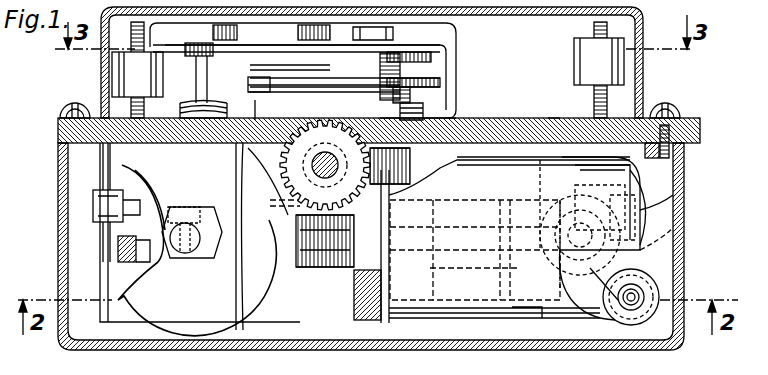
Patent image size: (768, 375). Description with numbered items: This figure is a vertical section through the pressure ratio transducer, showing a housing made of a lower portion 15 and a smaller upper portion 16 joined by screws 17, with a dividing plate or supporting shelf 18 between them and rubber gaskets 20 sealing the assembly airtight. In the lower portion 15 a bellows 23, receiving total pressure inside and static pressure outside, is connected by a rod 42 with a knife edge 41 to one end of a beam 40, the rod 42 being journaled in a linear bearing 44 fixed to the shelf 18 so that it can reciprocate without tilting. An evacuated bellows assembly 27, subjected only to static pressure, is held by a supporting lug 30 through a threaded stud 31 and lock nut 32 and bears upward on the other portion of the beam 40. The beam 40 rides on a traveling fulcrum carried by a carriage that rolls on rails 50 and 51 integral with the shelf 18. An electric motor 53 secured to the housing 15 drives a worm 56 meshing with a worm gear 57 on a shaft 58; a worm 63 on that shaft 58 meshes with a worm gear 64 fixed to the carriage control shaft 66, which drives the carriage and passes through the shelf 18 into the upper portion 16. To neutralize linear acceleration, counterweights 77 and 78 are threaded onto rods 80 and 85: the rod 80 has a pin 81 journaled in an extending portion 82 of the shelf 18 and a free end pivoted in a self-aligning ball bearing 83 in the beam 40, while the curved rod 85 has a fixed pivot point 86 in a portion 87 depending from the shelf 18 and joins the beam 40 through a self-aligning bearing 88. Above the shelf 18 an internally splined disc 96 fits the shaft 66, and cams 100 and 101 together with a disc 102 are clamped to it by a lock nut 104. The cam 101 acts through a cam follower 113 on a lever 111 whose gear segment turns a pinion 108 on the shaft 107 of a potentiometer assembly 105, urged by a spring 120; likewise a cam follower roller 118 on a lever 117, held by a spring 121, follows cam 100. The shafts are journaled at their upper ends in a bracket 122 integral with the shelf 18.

The lower housing portion 15 is at (684, 268).
The upper housing portion 16 is at (644, 34).
The screws 17 is at (672, 103).
The dividing plate or supporting shelf 18 is at (548, 106).
The rubber gaskets 20 is at (688, 124).
The bellows 23 is at (675, 203).
The evacuated bellows assembly 27 is at (228, 353).
The supporting lug 30 is at (200, 260).
The threaded stud 31 is at (183, 207).
The lock nut 32 is at (214, 210).
The beam 40 is at (490, 224).
The knife edge 41 is at (562, 212).
The rod 42 is at (592, 198).
The linear bearing 44 is at (605, 287).
The rail 50 is at (305, 268).
The rail 51 is at (236, 157).
The electric motor 53 is at (460, 320).
The worm 56 is at (322, 268).
The worm gear 57 is at (270, 180).
The shaft 58 is at (324, 178).
The worm 63 is at (322, 140).
The worm gear 64 is at (411, 163).
The carriage control shaft 66 is at (383, 70).
The counterweight 77 is at (112, 70).
The counterweight 78 is at (577, 42).
The rod 80 is at (145, 108).
The pin 81 is at (104, 224).
The extending portion 82 is at (94, 190).
The self-aligning ball bearing 83 is at (132, 262).
The rod 85 is at (594, 103).
The fixed pivot point 86 is at (645, 178).
The portion depending from the shelf 87 is at (646, 158).
The self-aligning bearing 88 is at (675, 218).
The internally splined disc 96 is at (424, 110).
The cam 100 is at (440, 80).
The cam 101 is at (432, 57).
The disc 102 is at (412, 96).
The lock nut 104 is at (345, 70).
The potentiometer assembly 105 is at (118, 352).
The shaft 107 is at (208, 78).
The pinion 108 is at (185, 48).
The lever 111 is at (224, 42).
The cam follower 113 is at (300, 40).
The lever 117 is at (270, 95).
The cam follower roller 118 is at (249, 89).
The spring 120 is at (228, 112).
The spring 121 is at (458, 116).
The bracket 122 is at (458, 36).